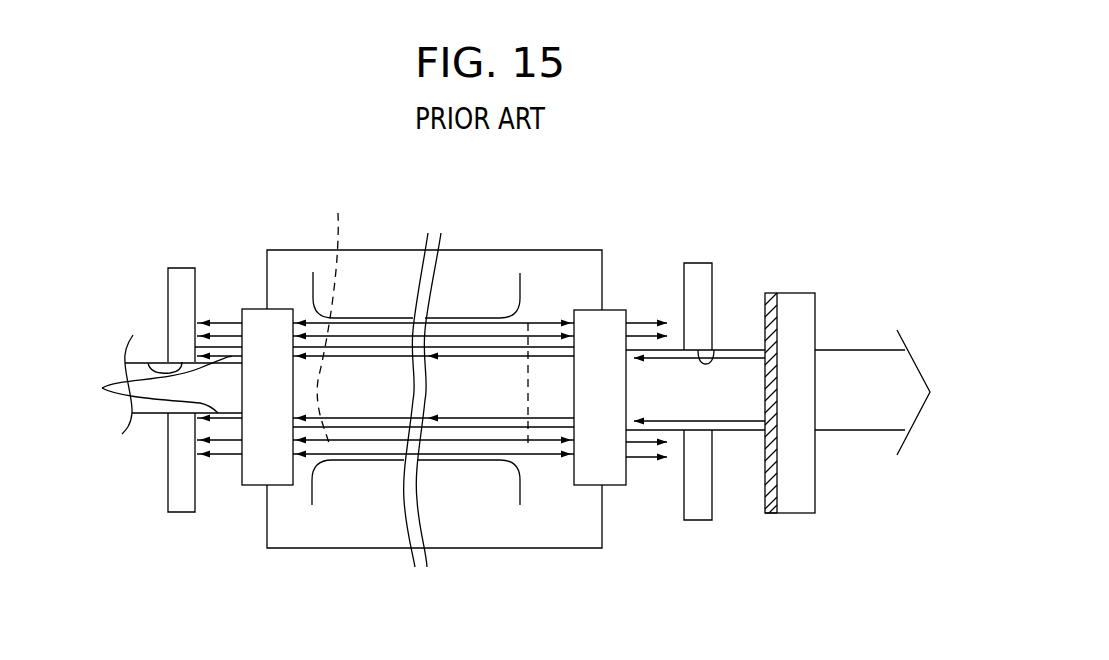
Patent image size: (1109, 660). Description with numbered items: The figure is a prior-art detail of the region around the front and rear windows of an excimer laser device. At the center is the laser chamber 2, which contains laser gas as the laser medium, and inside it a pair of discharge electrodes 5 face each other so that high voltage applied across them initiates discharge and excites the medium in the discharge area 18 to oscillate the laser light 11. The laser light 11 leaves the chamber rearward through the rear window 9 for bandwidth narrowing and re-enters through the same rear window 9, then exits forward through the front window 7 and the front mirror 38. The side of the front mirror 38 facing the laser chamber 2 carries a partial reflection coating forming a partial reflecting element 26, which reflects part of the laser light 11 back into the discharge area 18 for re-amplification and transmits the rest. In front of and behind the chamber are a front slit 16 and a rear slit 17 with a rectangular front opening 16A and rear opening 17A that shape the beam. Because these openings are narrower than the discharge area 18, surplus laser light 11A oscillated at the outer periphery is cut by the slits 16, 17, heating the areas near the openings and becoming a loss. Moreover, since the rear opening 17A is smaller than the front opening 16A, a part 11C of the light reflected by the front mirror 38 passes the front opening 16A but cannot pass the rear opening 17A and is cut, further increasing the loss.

The laser chamber 2 is at (271, 250).
The discharge electrodes 5 is at (520, 273).
The front window 7 is at (612, 310).
The rear window 9 is at (262, 486).
The laser light 11 is at (850, 350).
The surplus laser light 11A is at (226, 336).
The part of the laser light 11C is at (141, 384).
The front slit 16 is at (698, 263).
The front opening 16A is at (719, 352).
The rear slit 17 is at (187, 268).
The rear opening 17A is at (148, 363).
The discharge area 18 is at (422, 316).
The partial reflecting element 26 is at (770, 513).
The front mirror 38 is at (803, 293).